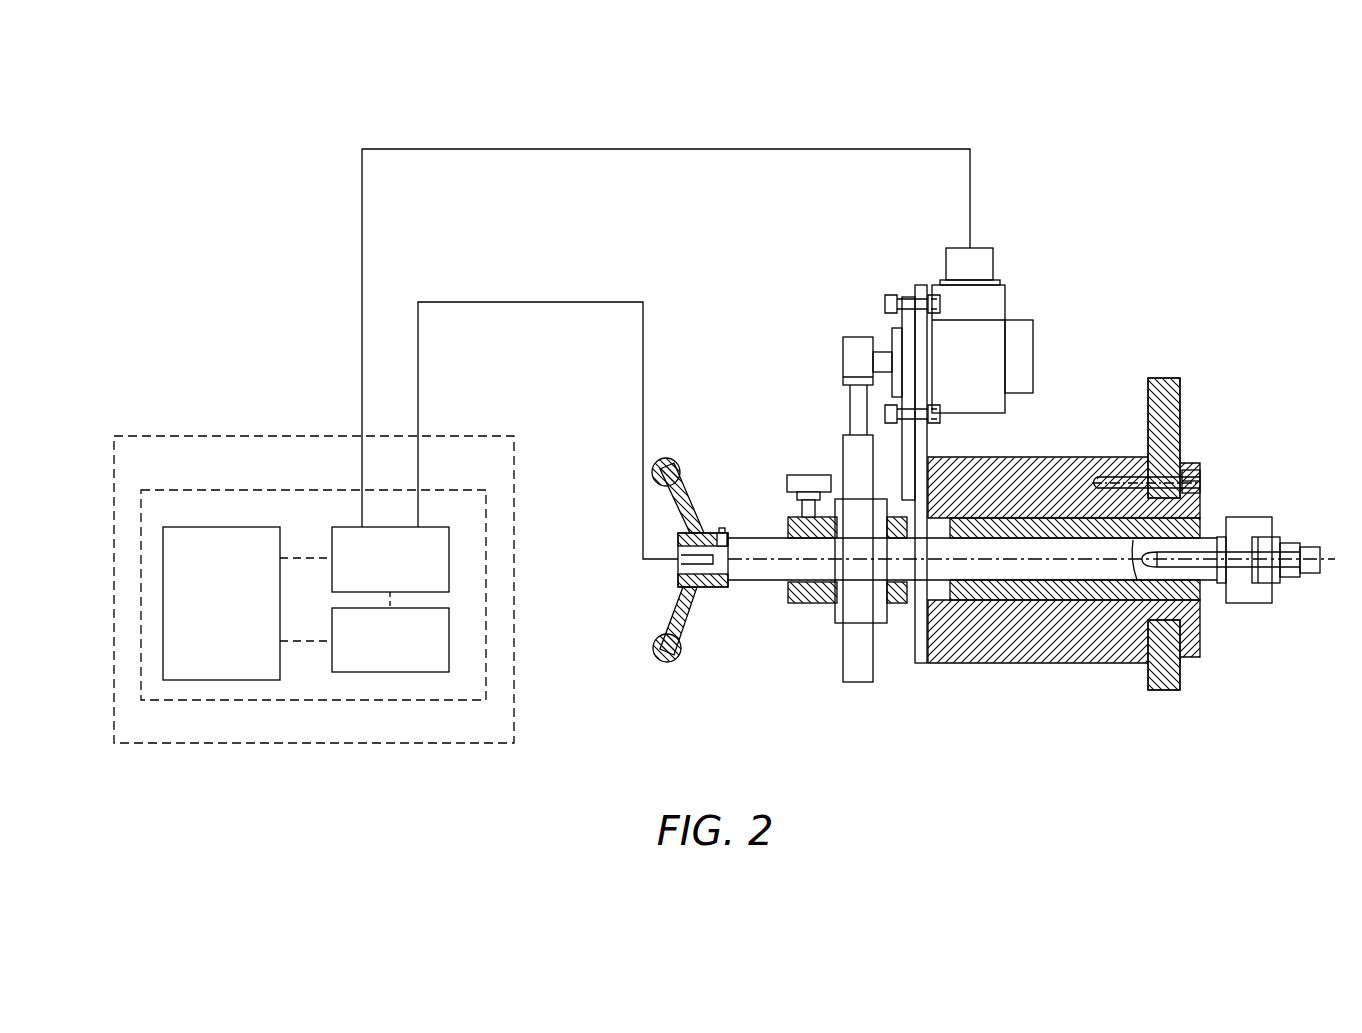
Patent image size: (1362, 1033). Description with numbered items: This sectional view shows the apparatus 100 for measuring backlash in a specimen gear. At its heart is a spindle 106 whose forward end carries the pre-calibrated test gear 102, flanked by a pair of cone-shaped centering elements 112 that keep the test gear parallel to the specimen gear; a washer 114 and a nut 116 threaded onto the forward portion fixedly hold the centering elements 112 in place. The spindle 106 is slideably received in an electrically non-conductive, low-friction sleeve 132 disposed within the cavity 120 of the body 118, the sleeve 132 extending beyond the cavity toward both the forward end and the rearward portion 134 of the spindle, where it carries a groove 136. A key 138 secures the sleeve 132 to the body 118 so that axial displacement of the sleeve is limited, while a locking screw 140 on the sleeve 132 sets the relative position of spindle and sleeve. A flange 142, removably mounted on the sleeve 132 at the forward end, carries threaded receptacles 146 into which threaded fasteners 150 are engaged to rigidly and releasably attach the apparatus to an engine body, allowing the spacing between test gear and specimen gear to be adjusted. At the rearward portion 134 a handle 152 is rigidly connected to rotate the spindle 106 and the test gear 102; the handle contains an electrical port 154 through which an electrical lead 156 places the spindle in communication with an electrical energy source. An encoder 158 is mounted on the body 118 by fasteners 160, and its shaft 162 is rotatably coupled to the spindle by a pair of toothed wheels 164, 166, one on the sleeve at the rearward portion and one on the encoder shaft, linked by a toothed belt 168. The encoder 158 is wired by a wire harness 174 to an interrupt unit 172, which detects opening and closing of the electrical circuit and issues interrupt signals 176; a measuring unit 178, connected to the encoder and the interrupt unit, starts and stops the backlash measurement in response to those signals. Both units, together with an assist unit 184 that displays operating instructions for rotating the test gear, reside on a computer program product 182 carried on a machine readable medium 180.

The apparatus 100 is at (1194, 115).
The test gear 102 is at (1262, 518).
The spindle 106 is at (768, 520).
The centering elements 112 is at (1220, 580).
The washer 114 is at (1290, 584).
The nut 116 is at (1219, 585).
The body 118 is at (1010, 654).
The cavity 120 is at (1212, 527).
The sleeve 132 is at (790, 594).
The rearward portion 134 is at (748, 556).
The groove 136 is at (1057, 518).
The key 138 is at (920, 585).
The locking screw 140 is at (800, 476).
The flange 142 is at (1170, 378).
The threaded receptacles 146 is at (722, 530).
The threaded fasteners 150 is at (1117, 477).
The handle 152 is at (676, 478).
The electrical port 154 is at (680, 559).
The electrical lead 156 is at (580, 302).
The encoder 158 is at (1000, 337).
The fasteners 160 is at (907, 415).
The shaft 162 is at (880, 352).
The toothed wheel 164 is at (851, 337).
The toothed wheel 166 is at (843, 665).
The toothed belt 168 is at (858, 676).
The interrupt unit 172 is at (390, 559).
The wire harness 174 is at (562, 149).
The interrupt signals 176 is at (300, 557).
The measuring unit 178 is at (390, 640).
The machine readable medium 180 is at (314, 589).
The computer program product 182 is at (313, 595).
The assist unit 184 is at (221, 603).